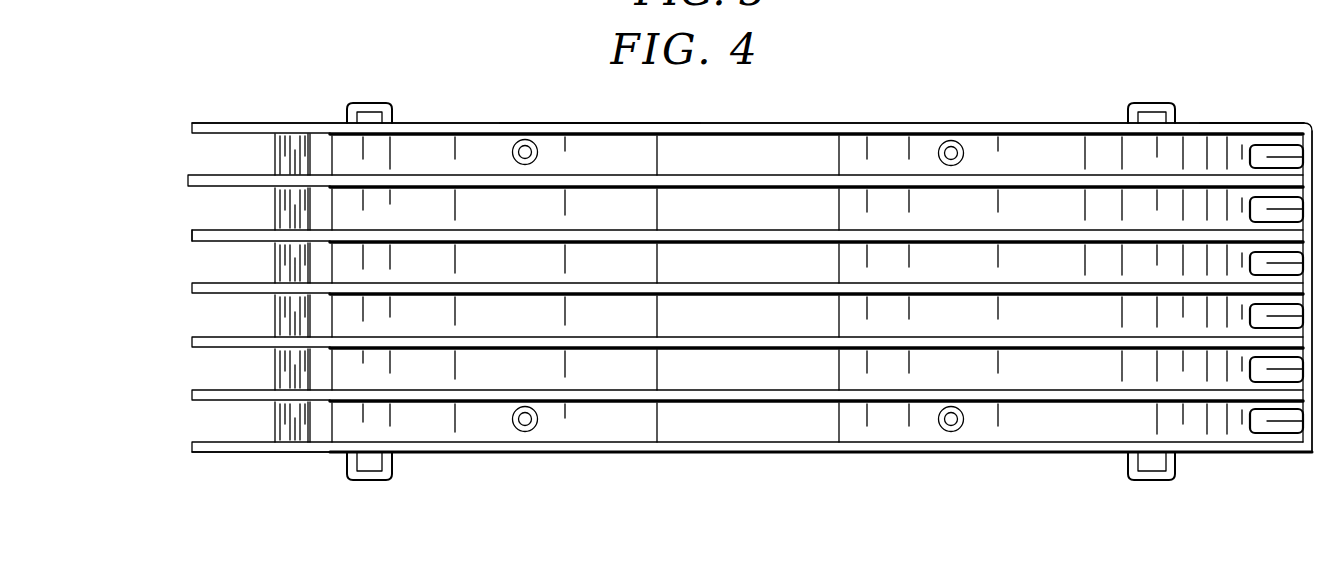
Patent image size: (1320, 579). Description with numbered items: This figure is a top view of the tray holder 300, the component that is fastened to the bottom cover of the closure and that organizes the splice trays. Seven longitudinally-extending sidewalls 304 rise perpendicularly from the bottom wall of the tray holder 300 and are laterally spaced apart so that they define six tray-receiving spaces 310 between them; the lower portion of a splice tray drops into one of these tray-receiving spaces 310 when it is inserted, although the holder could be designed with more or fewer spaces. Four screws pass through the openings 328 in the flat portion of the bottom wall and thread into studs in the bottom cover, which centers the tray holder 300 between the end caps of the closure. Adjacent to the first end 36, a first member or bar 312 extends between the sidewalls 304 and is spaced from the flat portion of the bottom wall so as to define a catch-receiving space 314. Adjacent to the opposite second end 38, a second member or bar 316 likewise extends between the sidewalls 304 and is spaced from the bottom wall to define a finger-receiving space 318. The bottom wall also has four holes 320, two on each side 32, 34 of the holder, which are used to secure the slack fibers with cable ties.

The tray holder 300 is at (990, 98).
The sidewalls 304 is at (768, 123).
The tray-receiving spaces 310 is at (190, 150).
The first member or bar 312 is at (277, 152).
The catch-receiving space 314 is at (319, 155).
The second member or bar 316 is at (1313, 135).
The finger-receiving space 318 is at (1262, 158).
The holes 320 is at (368, 112).
The openings 328 is at (516, 150).
The side 32 is at (693, 459).
The side 34 is at (596, 110).
The first end 36 is at (149, 232).
The second end 38 is at (1228, 101).